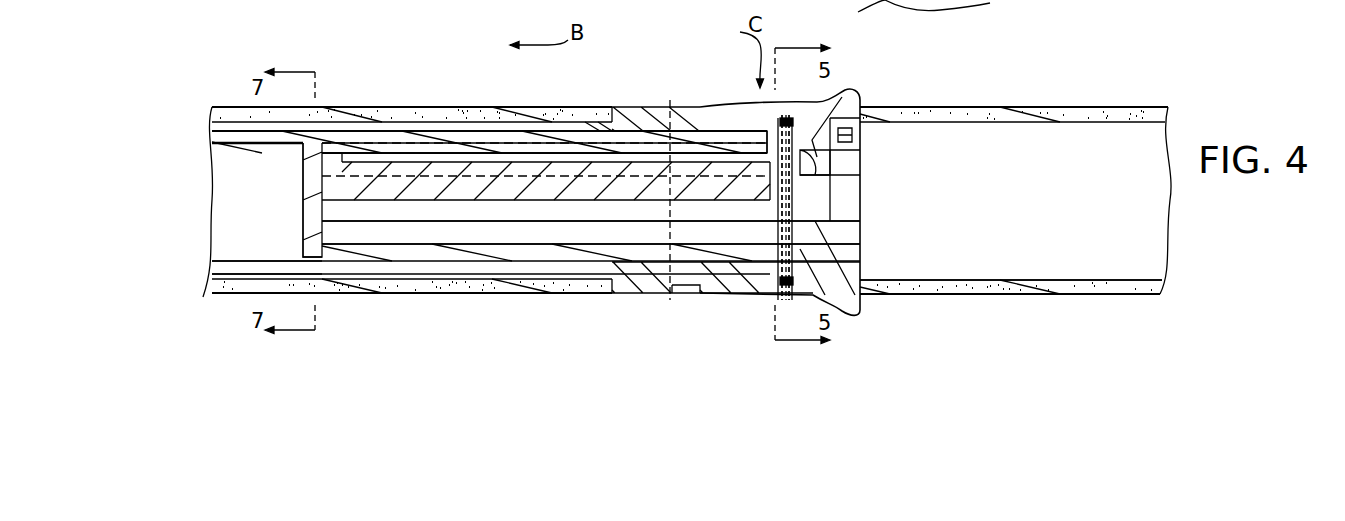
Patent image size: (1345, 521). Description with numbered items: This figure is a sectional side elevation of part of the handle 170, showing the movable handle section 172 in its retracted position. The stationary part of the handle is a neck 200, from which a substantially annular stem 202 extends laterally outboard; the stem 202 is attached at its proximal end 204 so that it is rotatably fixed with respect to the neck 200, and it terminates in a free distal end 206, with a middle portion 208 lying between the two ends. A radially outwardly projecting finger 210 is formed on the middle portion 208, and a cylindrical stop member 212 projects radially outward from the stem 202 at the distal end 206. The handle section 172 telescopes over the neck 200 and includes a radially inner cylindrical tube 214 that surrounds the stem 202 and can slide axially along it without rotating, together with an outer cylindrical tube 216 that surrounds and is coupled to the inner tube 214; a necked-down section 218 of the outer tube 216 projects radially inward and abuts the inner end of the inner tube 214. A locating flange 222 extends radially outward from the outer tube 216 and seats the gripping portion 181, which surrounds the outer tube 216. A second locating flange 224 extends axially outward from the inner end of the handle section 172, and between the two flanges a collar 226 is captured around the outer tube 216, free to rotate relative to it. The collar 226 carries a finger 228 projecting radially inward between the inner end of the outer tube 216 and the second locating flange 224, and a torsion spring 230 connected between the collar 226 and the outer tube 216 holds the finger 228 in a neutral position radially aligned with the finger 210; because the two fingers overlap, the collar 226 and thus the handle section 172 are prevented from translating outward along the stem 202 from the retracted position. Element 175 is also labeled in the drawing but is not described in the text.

The handle 170 is at (1050, 107).
The handle section 172 is at (222, 106).
The retaining member 175 is at (672, 292).
The gripping portion 181 is at (382, 106).
The neck 200 is at (1007, 295).
The stem 202 is at (322, 228).
The proximal end 204 is at (862, 100).
The distal end 206 is at (306, 207).
The middle portion 208 is at (862, 214).
The finger 210 is at (495, 165).
The cylindrical stop member 212 is at (306, 162).
The inner cylindrical tube 214 is at (405, 130).
The outer cylindrical tube 216 is at (587, 122).
The necked-down section 218 is at (760, 134).
The locating flange 222 is at (614, 110).
The second locating flange 224 is at (862, 135).
The collar 226 is at (733, 295).
The finger 228 is at (862, 167).
The torsion spring 230 is at (795, 228).